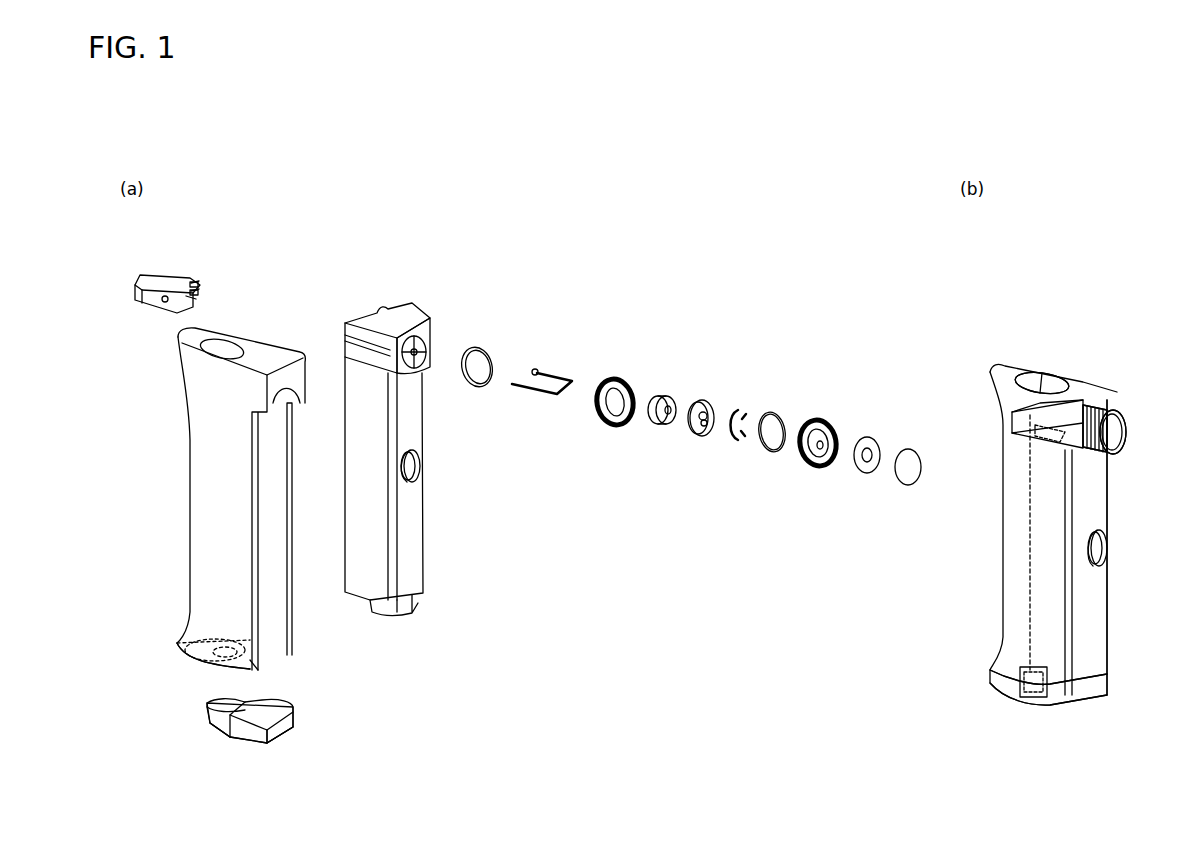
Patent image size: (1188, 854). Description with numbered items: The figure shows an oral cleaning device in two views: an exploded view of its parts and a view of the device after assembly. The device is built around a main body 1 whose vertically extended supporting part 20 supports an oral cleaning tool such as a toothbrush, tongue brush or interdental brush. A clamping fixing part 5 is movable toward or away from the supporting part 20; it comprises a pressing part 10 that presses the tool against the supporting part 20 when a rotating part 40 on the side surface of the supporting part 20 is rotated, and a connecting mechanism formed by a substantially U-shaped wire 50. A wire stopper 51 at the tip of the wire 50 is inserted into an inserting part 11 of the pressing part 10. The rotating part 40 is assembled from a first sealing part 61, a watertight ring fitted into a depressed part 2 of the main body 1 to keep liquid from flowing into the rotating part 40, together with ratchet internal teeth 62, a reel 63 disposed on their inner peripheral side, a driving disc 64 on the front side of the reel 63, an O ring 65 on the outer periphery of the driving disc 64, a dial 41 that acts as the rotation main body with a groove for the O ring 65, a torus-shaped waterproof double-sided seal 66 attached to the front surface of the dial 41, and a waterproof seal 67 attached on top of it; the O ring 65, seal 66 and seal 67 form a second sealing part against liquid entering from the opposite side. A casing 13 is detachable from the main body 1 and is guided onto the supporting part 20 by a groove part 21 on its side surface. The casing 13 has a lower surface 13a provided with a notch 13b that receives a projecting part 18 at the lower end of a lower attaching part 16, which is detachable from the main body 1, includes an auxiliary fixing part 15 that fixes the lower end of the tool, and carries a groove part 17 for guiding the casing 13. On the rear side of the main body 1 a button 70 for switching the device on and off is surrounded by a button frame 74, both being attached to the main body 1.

The main body 1 is at (430, 512).
The depressed part 2 is at (430, 342).
The clamping fixing part 5 is at (1053, 383).
The pressing part 10 is at (183, 277).
The inserting part 11 is at (192, 293).
The casing 13 is at (190, 520).
The lower surface 13a is at (180, 643).
The notch 13b is at (250, 672).
The auxiliary fixing part 15 is at (213, 700).
The lower attaching part 16 is at (240, 753).
The groove part 17 is at (277, 743).
The projecting part 18 is at (223, 732).
The supporting part 20 is at (397, 317).
The groove part 21 is at (402, 610).
The rotating part 40 is at (1130, 430).
The dial 41 is at (810, 470).
The wire 50 is at (567, 372).
The wire stopper 51 is at (536, 368).
The first sealing part 61 is at (477, 350).
The ratchet internal teeth 62 is at (618, 377).
The reel 63 is at (670, 396).
The driving disc 64 is at (723, 397).
The O ring 65 is at (775, 412).
The waterproof double-sided seal 66 is at (860, 477).
The waterproof seal 67 is at (903, 483).
The button 70 is at (420, 470).
The button frame 74 is at (418, 452).